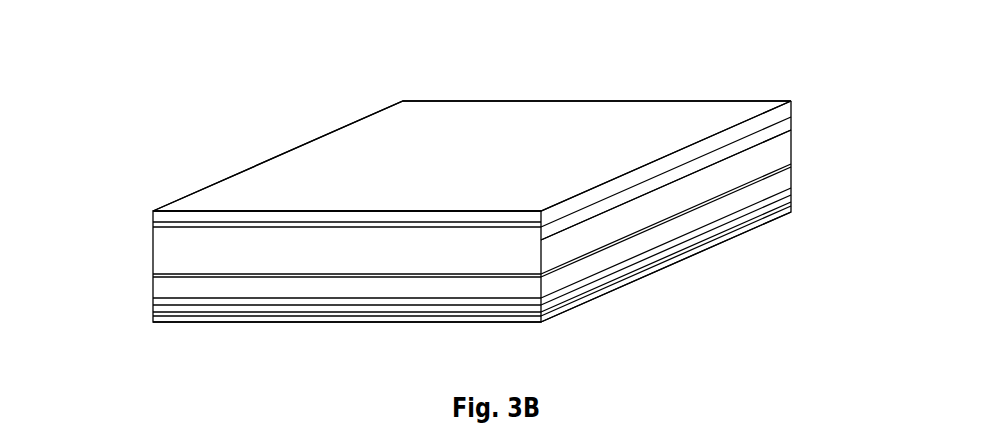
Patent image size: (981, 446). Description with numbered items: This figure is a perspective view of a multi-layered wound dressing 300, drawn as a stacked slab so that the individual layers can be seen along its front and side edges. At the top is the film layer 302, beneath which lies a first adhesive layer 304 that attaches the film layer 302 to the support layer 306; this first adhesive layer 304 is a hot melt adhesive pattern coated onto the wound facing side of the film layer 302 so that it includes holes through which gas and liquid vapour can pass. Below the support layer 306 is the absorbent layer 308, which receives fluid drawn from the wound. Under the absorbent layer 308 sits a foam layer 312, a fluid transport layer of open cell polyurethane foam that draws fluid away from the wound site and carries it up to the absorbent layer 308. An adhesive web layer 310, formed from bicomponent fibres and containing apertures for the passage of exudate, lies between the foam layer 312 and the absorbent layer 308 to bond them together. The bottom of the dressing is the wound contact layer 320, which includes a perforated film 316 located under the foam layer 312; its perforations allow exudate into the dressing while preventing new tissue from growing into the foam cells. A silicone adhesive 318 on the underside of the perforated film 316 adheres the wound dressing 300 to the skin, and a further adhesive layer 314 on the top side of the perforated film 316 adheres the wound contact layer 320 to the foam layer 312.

The wound dressing 300 is at (297, 113).
The film layer 302 is at (668, 118).
The first adhesive layer 304 is at (163, 226).
The support layer 306 is at (787, 120).
The absorbent layer 308 is at (783, 150).
The adhesive web layer 310 is at (165, 275).
The foam layer 312 is at (778, 187).
The further adhesive layer 314 is at (160, 304).
The perforated film 316 is at (790, 200).
The silicone adhesive 318 is at (755, 230).
The wound contact layer 320 is at (150, 310).